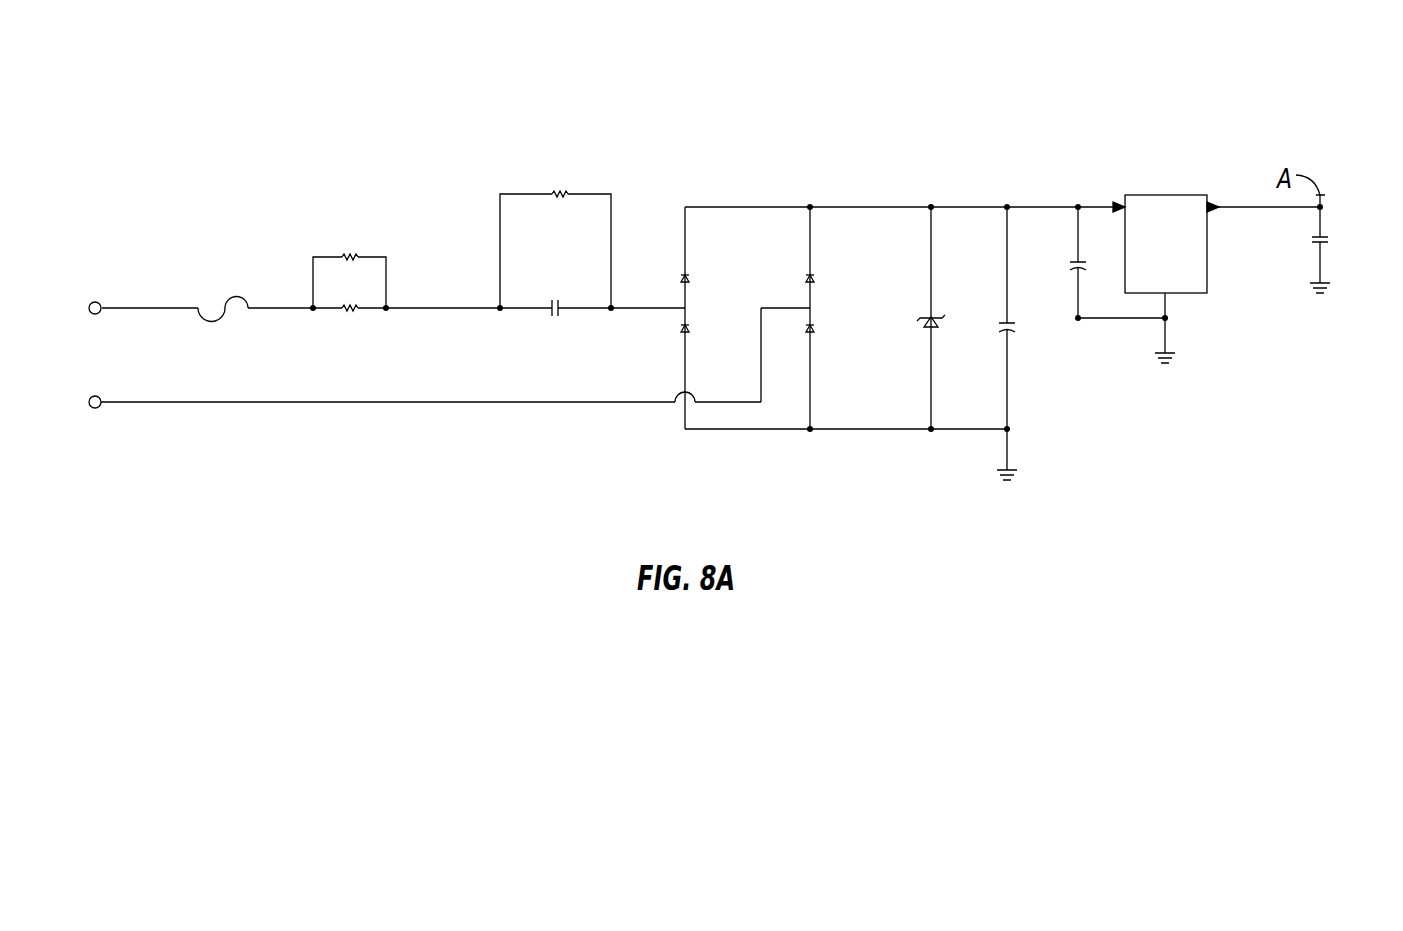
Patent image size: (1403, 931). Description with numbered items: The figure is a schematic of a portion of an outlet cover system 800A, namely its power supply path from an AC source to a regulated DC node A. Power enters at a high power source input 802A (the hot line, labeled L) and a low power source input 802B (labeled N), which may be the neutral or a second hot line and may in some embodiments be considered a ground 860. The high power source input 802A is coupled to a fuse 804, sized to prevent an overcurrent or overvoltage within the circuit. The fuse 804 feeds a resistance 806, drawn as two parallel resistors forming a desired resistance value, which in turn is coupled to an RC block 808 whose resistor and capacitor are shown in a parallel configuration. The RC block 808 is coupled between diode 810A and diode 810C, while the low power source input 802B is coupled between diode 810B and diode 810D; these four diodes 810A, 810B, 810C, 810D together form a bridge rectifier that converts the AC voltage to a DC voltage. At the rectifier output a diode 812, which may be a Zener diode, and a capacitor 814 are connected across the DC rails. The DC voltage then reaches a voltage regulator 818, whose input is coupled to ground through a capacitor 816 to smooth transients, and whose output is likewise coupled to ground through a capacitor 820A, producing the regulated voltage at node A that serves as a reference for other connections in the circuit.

The outlet cover system 800A is at (1279, 121).
The high power source input 802A is at (110, 303).
The low power source input 802B is at (115, 403).
The fuse 804 is at (228, 294).
The resistance 806 is at (322, 248).
The RC block 808 is at (507, 320).
The diode 810A is at (690, 278).
The diode 810B is at (815, 278).
The diode 810C is at (683, 334).
The diode 810D is at (815, 331).
The diode 812 is at (928, 318).
The capacitor 814 is at (1003, 330).
The capacitor 816 is at (1073, 268).
The voltage regulator 818 is at (1165, 195).
The capacitor 820A is at (1315, 245).
The ground 860 is at (1307, 330).